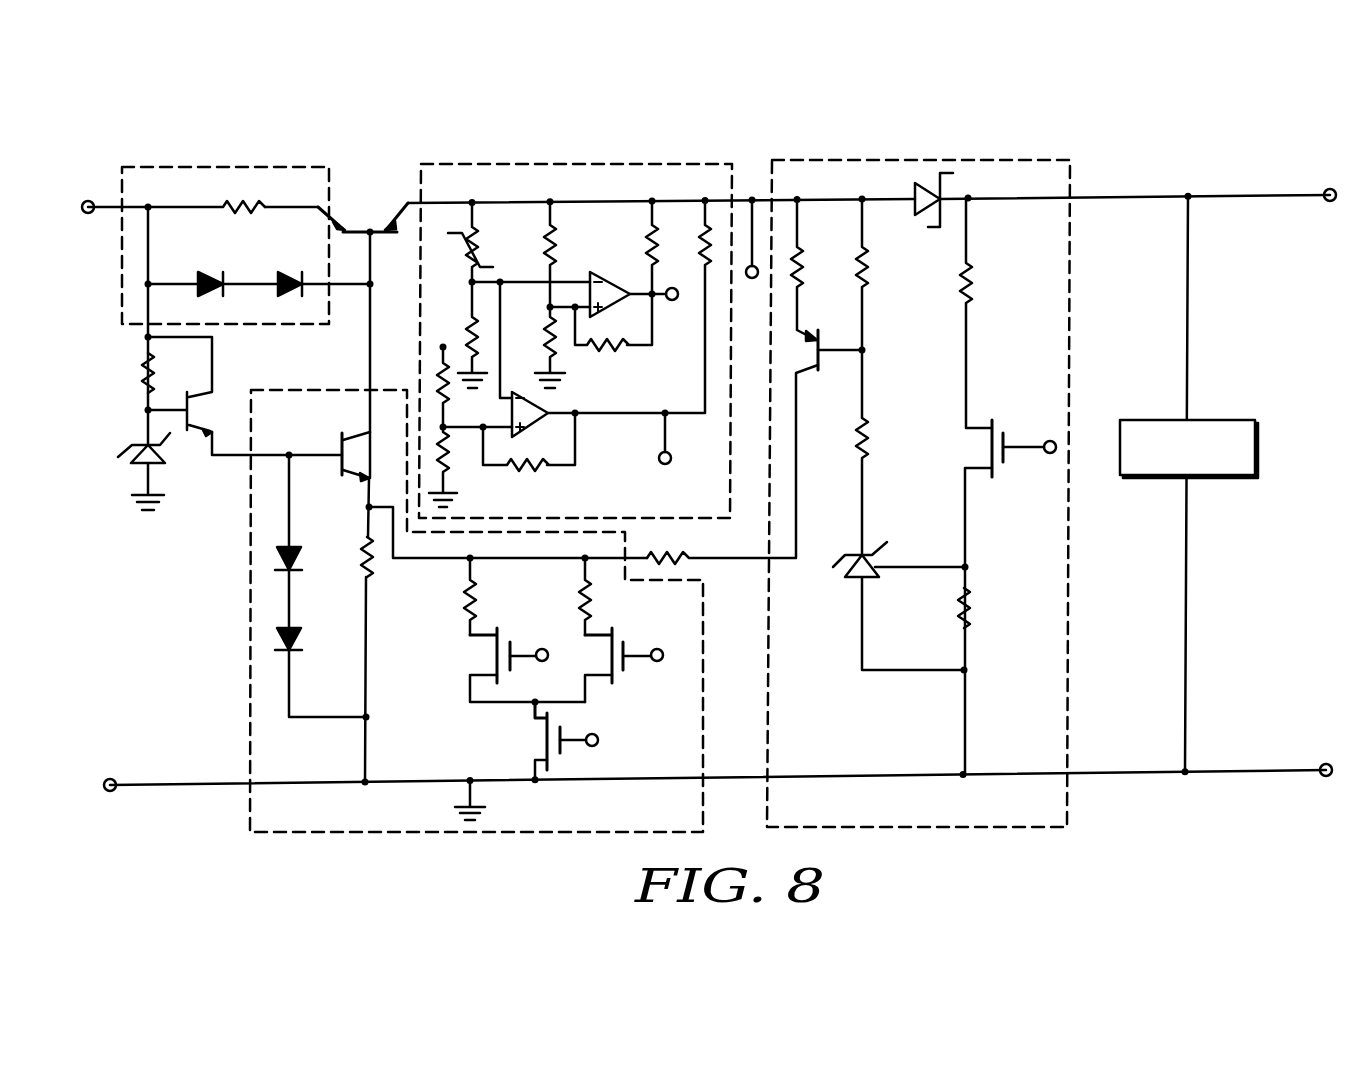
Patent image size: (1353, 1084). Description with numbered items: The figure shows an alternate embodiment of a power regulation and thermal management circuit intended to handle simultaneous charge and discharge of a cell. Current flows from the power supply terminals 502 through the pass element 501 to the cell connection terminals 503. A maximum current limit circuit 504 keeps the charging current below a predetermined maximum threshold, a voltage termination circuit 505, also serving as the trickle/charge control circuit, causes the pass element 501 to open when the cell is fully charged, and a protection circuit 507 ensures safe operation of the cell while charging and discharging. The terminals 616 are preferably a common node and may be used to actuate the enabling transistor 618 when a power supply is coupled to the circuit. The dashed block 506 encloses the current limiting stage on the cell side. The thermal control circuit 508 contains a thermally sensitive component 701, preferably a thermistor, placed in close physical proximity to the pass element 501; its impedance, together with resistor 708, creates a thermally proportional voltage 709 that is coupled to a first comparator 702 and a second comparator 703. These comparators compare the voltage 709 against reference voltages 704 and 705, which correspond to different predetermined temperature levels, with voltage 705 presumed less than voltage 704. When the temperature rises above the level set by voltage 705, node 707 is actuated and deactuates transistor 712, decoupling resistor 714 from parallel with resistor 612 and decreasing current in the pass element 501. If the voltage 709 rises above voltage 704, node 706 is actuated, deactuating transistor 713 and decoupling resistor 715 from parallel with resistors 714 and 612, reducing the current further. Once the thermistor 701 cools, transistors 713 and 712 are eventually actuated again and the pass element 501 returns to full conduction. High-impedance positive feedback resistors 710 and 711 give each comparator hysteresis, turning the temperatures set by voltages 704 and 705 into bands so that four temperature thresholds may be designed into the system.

The pass element 501 is at (380, 225).
The power supply terminals 502 is at (88, 200).
The cell connection terminals 503 is at (1330, 188).
The maximum current limit circuit 504 is at (187, 165).
The voltage termination circuit 505 is at (250, 587).
The current limit circuit 506 is at (773, 162).
The protection circuit 507 is at (1122, 417).
The thermal control circuit 508 is at (420, 165).
The resistor 612 is at (365, 565).
The terminals 616 is at (595, 747).
The enabling transistor 618 is at (537, 740).
The thermally sensitive component 701 is at (468, 230).
The first comparator 702 is at (618, 277).
The second comparator 703 is at (545, 410).
The reference voltage 704 is at (533, 347).
The reference voltage 705 is at (468, 430).
The node 706 is at (673, 300).
The node 707 is at (657, 458).
The resistor 708 is at (465, 343).
The thermally proportional voltage 709 is at (502, 283).
The hysteresis resistor 710 is at (617, 347).
The hysteresis resistor 711 is at (533, 468).
The transistor 712 is at (613, 687).
The transistor 713 is at (488, 657).
The resistor 714 is at (580, 598).
The resistor 715 is at (468, 603).